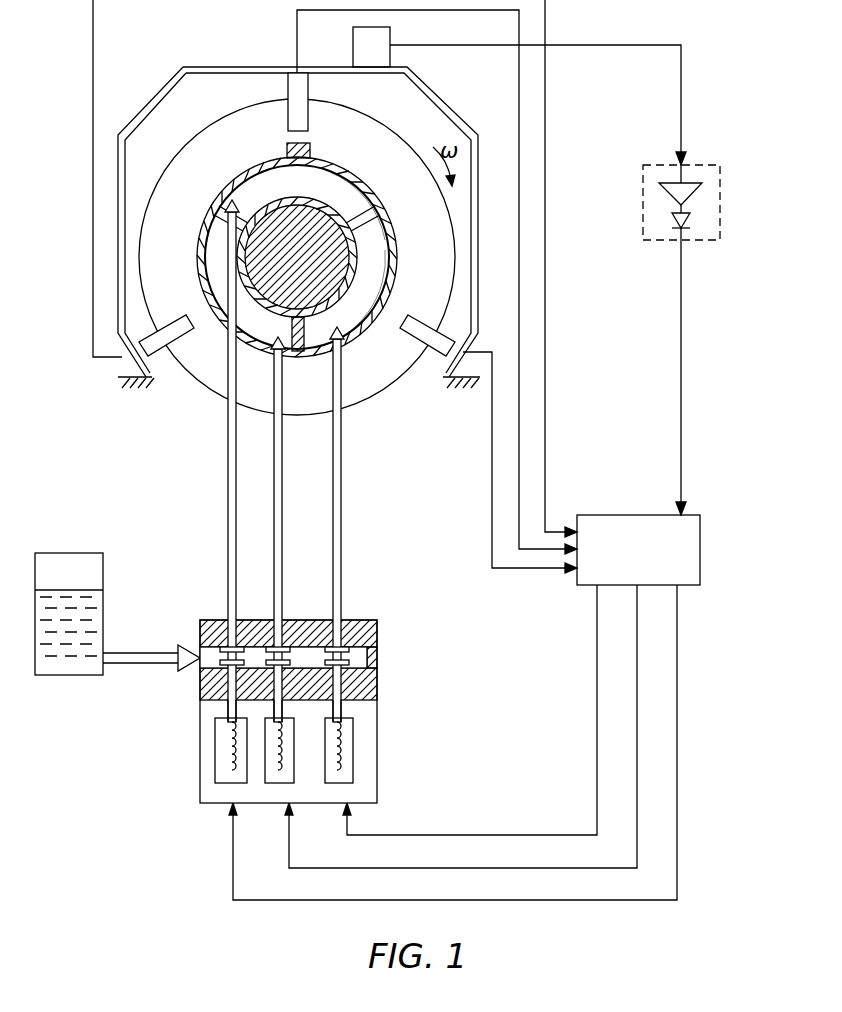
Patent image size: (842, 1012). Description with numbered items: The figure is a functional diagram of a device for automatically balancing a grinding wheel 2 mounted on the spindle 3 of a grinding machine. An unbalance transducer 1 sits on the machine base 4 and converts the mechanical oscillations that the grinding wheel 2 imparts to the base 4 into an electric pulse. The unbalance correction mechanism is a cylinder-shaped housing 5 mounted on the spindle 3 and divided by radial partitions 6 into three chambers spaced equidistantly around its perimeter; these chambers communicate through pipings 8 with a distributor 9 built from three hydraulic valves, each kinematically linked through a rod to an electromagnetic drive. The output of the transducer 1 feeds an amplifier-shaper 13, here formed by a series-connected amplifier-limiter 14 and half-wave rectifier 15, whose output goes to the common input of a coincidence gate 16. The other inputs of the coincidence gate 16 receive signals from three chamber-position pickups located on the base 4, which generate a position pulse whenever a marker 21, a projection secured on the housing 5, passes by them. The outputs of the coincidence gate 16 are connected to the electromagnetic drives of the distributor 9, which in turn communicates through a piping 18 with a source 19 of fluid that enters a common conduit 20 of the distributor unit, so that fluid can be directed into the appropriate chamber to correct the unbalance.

The unbalance transducer 1 is at (390, 37).
The grinding wheel 2 is at (182, 157).
The spindle 3 is at (258, 274).
The machine base 4 is at (128, 133).
The cylinder-shaped housing 5 is at (200, 237).
The radial partitions 6 is at (359, 228).
The pipings 8 is at (341, 546).
The distributor 9 is at (388, 662).
The amplifier-shaper 13 is at (707, 165).
The amplifier-limiter 14 is at (668, 183).
The half-wave rectifier 15 is at (672, 222).
The coincidence gate 16 is at (464, 707).
The piping 18 is at (143, 662).
The source of fluid 19 is at (102, 575).
The common conduit 20 is at (368, 668).
The marker 21 is at (288, 150).